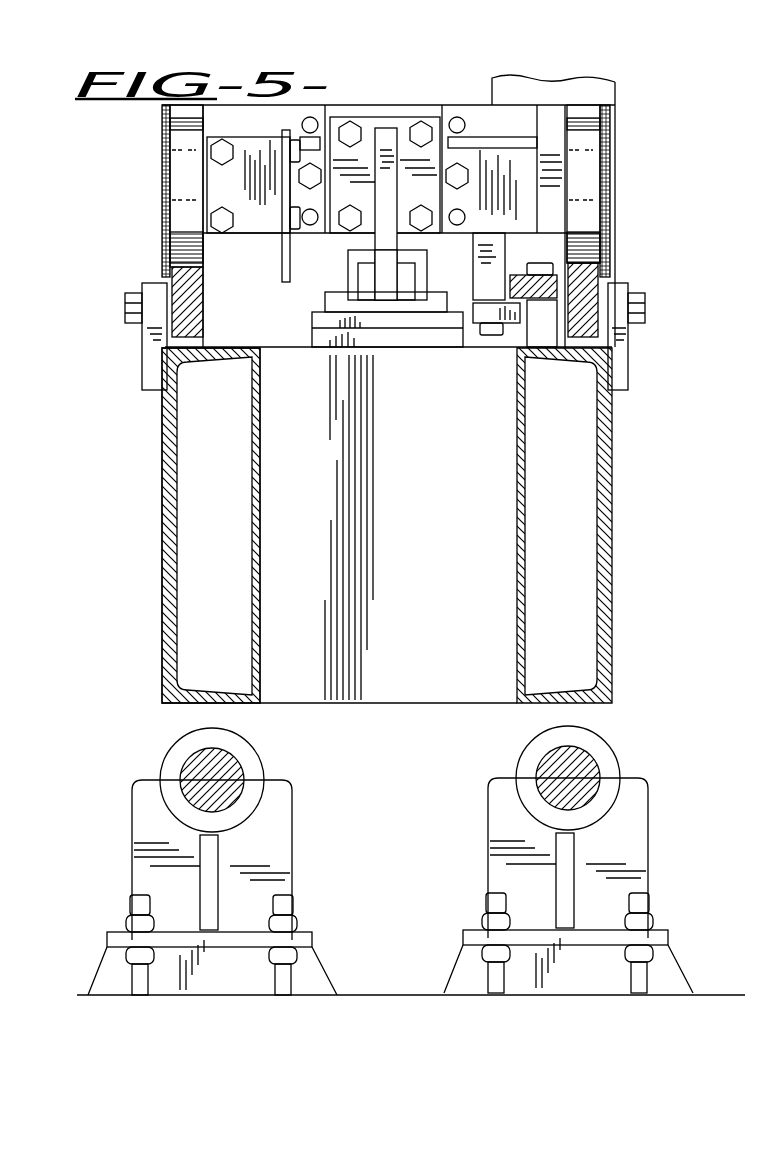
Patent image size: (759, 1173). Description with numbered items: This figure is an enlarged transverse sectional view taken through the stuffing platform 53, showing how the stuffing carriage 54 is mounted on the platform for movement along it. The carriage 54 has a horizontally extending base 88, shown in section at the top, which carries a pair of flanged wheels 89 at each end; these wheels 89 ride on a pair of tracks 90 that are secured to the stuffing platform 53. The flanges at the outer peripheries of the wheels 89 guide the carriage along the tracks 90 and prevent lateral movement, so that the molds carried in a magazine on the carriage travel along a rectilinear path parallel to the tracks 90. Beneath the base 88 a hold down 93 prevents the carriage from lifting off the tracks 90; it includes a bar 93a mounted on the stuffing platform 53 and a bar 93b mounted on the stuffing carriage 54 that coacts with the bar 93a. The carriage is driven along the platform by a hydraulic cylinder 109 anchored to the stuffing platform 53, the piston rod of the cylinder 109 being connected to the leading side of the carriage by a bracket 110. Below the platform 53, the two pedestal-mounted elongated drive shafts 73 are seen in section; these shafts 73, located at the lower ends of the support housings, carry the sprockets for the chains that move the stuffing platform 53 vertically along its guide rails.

The stuffing platform 53 is at (616, 525).
The stuffing carriage 54 is at (522, 184).
The drive shafts 73 is at (548, 757).
The base 88 is at (473, 217).
The wheels 89 is at (178, 222).
The tracks 90 is at (205, 285).
The hold down 93 is at (505, 333).
The bar 93a is at (547, 300).
The bar 93b is at (500, 318).
The hydraulic cylinder 109 is at (368, 292).
The bracket 110 is at (387, 290).